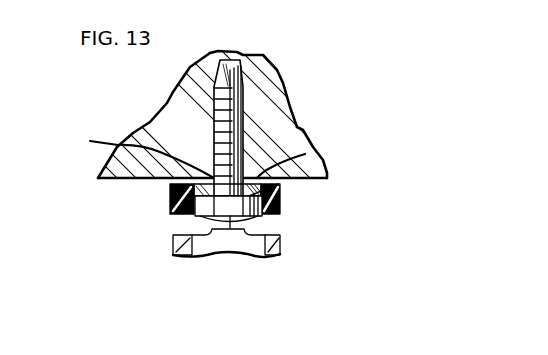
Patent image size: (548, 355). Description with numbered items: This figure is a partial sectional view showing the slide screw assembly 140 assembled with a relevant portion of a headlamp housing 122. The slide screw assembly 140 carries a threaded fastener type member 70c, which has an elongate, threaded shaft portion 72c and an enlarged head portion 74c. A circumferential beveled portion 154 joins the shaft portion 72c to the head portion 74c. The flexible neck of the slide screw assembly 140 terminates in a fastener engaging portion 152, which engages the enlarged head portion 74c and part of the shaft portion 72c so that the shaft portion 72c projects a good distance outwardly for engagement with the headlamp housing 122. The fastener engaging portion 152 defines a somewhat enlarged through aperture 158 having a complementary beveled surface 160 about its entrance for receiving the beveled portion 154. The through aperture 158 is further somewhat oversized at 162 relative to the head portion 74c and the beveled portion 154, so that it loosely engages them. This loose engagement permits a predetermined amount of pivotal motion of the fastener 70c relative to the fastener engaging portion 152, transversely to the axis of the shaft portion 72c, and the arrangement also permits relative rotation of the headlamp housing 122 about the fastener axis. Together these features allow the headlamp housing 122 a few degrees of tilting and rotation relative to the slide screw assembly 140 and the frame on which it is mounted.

The threaded fastener type member 70c is at (245, 54).
The threaded shaft portion 72c is at (247, 98).
The headlamp housing 122 is at (294, 115).
The beveled surface 160 is at (133, 148).
The through aperture 158 is at (305, 154).
The fastener engaging portion 152 is at (282, 188).
The beveled portion 154 is at (196, 223).
The oversized portion of aperture 162 is at (260, 226).
The slide screw assembly 140 is at (290, 244).
The enlarged head portion 74c is at (232, 220).